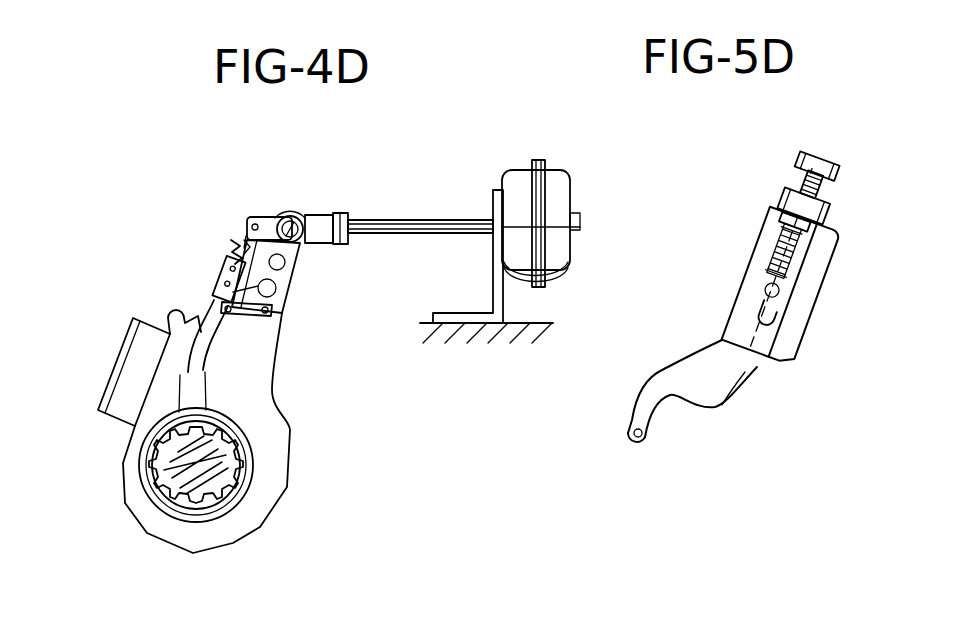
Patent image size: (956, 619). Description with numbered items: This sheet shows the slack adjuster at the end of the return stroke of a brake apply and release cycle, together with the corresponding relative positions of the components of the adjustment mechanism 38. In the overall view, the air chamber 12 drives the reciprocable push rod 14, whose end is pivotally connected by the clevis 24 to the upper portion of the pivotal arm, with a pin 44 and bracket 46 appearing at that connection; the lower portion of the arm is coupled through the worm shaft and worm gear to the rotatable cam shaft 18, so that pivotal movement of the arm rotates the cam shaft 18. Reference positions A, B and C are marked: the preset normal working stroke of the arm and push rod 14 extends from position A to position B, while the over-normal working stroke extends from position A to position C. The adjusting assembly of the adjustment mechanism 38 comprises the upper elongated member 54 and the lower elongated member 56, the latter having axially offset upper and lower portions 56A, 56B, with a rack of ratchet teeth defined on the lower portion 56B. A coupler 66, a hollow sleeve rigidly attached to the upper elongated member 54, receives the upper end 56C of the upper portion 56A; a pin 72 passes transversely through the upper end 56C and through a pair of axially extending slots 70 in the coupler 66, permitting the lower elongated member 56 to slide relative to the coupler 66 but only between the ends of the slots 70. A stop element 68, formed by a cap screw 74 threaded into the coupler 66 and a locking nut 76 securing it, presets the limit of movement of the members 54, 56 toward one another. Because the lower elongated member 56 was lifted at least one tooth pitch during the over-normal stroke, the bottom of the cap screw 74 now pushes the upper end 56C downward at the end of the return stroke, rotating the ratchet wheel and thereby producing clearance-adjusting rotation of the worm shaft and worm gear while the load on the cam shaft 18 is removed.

In FIG. 4D, the air chamber 12 is at (524, 170).
In FIG. 4D, the push rod 14 is at (428, 217).
In FIG. 4D, the cam shaft 18 is at (238, 473).
In FIG. 4D, the clevis 24 is at (318, 221).
In FIG. 4D, the adjustment mechanism 38 is at (240, 208).
In FIG. 5D, the adjustment mechanism 38 is at (786, 140).
In FIG. 4D, the clevis pin 44 is at (268, 214).
In FIG. 4D, the bracket 46 is at (286, 318).
In FIG. 4D, the upper elongated member 54 is at (285, 260).
In FIG. 5D, the upper elongated member 54 is at (850, 240).
In FIG. 4D, the lower elongated member 56 is at (170, 312).
In FIG. 5D, the lower elongated member 56 is at (660, 363).
In FIG. 5D, the upper portion 56A is at (760, 373).
In FIG. 5D, the lower portion 56B is at (626, 418).
In FIG. 5D, the upper end 56C is at (770, 270).
In FIG. 4D, the coupler 66 is at (216, 272).
In FIG. 5D, the coupler 66 is at (767, 221).
In FIG. 4D, the stop element 68 is at (231, 234).
In FIG. 5D, the stop element 68 is at (852, 172).
In FIG. 5D, the slots 70 is at (777, 314).
In FIG. 4D, the pin 72 is at (276, 289).
In FIG. 5D, the pin 72 is at (766, 290).
In FIG. 5D, the cap screw 74 is at (806, 163).
In FIG. 5D, the locking nut 76 is at (787, 197).
In FIG. 4D, the position A is at (210, 460).
In FIG. 4D, the position B is at (195, 452).
In FIG. 4D, the position C is at (198, 445).